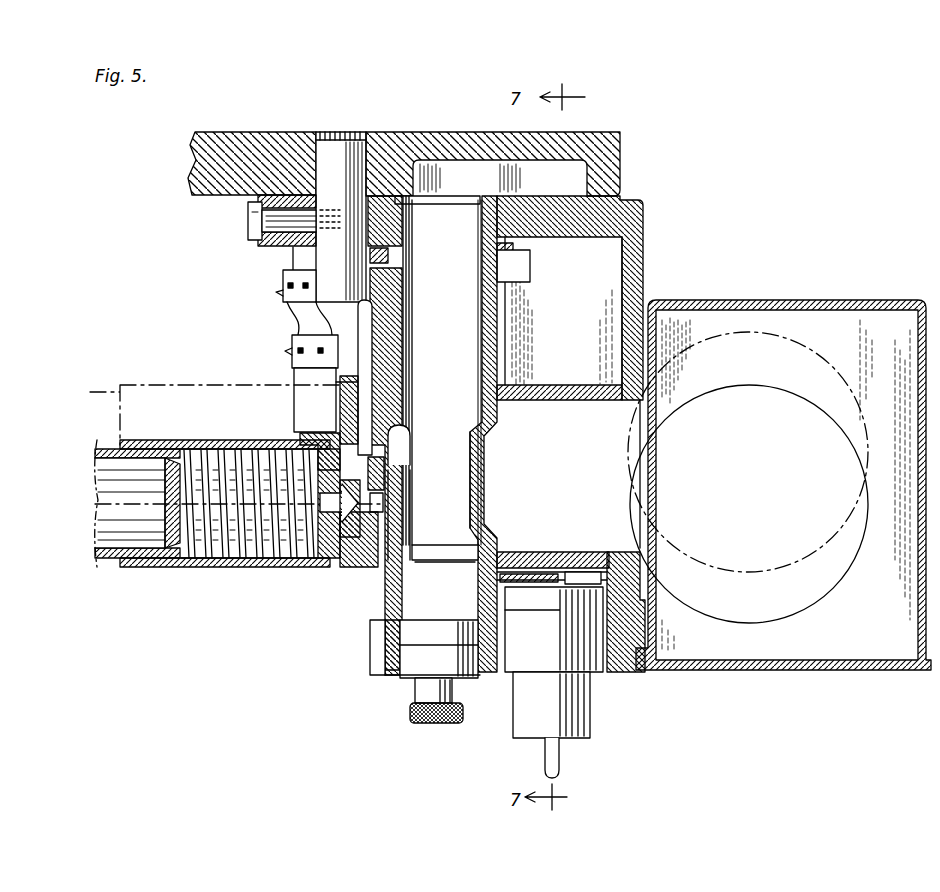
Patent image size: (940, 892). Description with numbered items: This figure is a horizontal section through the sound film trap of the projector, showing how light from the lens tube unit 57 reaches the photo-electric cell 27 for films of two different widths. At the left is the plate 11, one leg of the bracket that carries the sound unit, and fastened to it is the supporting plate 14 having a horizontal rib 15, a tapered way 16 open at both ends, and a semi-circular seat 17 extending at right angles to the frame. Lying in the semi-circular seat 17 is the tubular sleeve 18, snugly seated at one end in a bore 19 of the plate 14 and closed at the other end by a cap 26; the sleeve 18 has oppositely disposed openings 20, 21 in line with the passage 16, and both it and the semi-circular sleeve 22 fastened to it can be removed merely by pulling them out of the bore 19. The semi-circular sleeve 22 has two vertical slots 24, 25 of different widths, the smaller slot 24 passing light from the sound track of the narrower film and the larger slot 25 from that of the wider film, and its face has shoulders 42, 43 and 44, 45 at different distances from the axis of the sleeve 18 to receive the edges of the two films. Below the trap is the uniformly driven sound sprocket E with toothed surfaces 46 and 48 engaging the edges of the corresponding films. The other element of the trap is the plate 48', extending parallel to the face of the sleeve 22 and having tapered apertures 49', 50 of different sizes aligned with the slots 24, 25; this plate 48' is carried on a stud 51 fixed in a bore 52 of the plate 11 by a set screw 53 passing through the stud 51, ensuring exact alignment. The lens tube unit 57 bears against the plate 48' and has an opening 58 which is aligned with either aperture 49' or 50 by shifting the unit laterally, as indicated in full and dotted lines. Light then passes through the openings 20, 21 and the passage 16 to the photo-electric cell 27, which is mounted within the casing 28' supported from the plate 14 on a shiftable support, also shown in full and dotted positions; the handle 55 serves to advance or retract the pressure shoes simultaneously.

The plate 11 is at (270, 136).
The stud 51 is at (334, 160).
The bore 52 is at (362, 134).
The set screw 53 is at (250, 224).
The shoulder 42 is at (352, 280).
The toothed surface 46 is at (280, 294).
The toothed surface 48 is at (285, 347).
The sound film sprocket E is at (300, 378).
The semi-circular sleeve 22 is at (380, 380).
The tapered aperture 49' is at (297, 443).
The plate 48' is at (331, 410).
The lens tube unit 57 is at (196, 568).
The opening 58 is at (322, 566).
The tapered aperture 50 is at (354, 558).
The supporting plate 14 is at (624, 208).
The bore 19 is at (481, 206).
The sleeve 18 is at (403, 302).
The shoulder 44 is at (376, 338).
The semi-circular seat 17 is at (495, 342).
The rib 15 is at (573, 389).
The slot 24 is at (410, 437).
The shoulder 45 is at (372, 455).
The opening 21 is at (472, 468).
The opening 20 is at (405, 500).
The slot 25 is at (384, 506).
The shoulder 43 is at (418, 565).
The cap 26 is at (417, 660).
The handle 55 is at (560, 766).
The tapered way 16 is at (553, 532).
The photo-electric cell 27 is at (748, 477).
The casing 28' is at (783, 469).